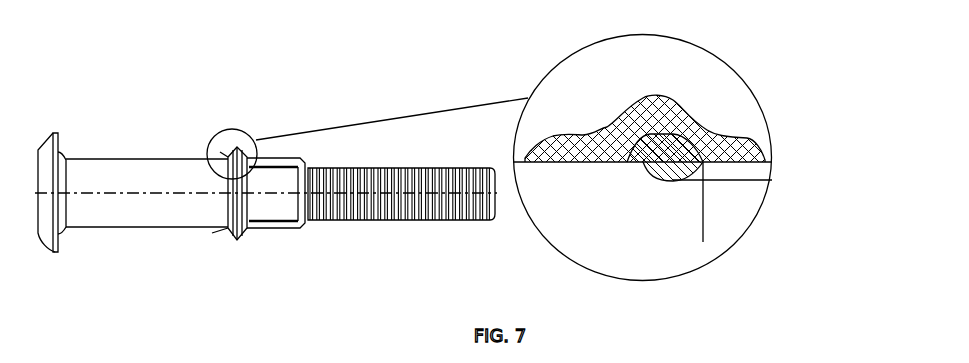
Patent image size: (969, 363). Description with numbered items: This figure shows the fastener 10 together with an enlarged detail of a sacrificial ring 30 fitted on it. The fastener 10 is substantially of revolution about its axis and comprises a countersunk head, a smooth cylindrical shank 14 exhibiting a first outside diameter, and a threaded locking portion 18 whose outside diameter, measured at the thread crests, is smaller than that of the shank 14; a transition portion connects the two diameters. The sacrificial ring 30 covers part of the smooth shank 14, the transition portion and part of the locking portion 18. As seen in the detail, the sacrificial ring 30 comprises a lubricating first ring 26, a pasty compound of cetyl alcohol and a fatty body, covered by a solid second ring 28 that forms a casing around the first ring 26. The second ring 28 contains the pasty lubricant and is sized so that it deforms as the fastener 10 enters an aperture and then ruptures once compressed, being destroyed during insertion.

The fastener 10 is at (461, 182).
The smooth cylindrical shank 14 is at (125, 228).
The locking portion 18 is at (282, 228).
The lubricating first ring 26 is at (668, 180).
The solid second ring 28 is at (720, 96).
The sacrificial ring 30 is at (229, 136).